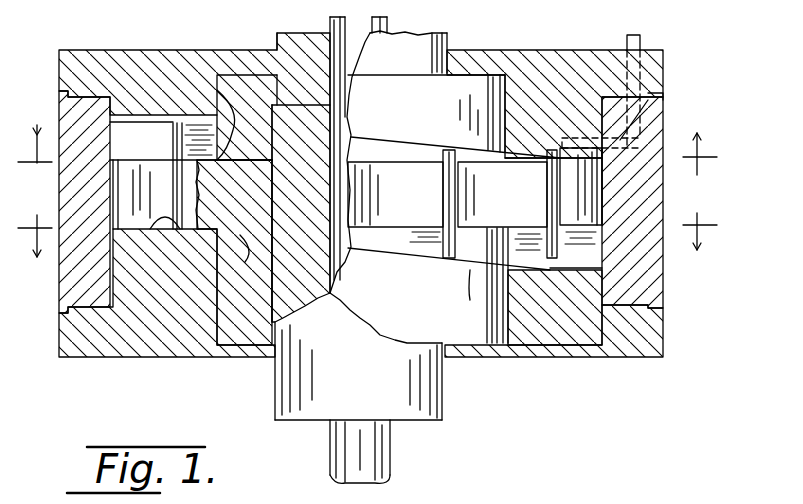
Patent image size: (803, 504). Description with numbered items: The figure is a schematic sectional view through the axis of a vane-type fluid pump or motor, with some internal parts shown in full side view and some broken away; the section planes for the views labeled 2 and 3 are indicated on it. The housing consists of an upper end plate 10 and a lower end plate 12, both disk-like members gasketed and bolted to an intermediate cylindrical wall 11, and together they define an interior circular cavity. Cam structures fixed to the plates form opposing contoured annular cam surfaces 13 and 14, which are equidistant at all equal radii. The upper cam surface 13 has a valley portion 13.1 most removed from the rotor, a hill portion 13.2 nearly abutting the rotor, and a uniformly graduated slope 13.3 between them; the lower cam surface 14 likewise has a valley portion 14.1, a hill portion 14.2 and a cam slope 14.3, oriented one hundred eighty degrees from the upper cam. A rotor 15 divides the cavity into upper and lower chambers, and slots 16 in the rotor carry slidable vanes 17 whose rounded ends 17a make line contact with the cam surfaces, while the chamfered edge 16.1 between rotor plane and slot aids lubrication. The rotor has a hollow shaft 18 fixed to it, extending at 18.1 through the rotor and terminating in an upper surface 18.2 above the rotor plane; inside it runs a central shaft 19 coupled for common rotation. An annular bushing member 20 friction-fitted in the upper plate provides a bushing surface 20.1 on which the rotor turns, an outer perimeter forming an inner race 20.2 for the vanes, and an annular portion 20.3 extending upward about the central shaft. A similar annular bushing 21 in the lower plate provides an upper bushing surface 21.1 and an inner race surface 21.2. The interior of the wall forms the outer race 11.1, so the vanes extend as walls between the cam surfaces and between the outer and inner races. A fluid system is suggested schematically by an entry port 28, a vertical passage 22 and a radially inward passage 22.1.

The upper end plate member 10 is at (533, 50).
The intermediate cylindrical wall 11 is at (640, 195).
The outer race 11.1 is at (117, 195).
The lower end plate member 12 is at (597, 340).
The cam surface 13 is at (393, 143).
The valley portion 13.1 is at (150, 128).
The hill portion 13.2 is at (590, 162).
The slope 13.3 is at (360, 133).
The cam surface 14 is at (372, 255).
The valley portion 14.1 is at (587, 268).
The hill portion 14.2 is at (170, 229).
The cam slope 14.3 is at (480, 283).
The rotor 15 is at (510, 193).
The slots 16 is at (557, 193).
The edge 16.1 is at (440, 160).
The vanes 17 is at (530, 248).
The ends of the vanes 17a is at (170, 118).
The hollow shaft 18 is at (445, 390).
The hollow shaft extension 18.1 is at (322, 219).
The upper surface 18.2 is at (278, 115).
The central shaft 19 is at (382, 25).
The annular bushing member 20 is at (256, 103).
The bushing surface 20.1 is at (218, 125).
The inner race 20.2 is at (200, 122).
The annular portion 20.3 is at (300, 48).
The annular bushing 21 is at (473, 347).
The upper bushing surface 21.1 is at (233, 267).
The inner race surface 21.2 is at (503, 260).
The vertical passage 22 is at (640, 80).
The radially inward passage 22.1 is at (612, 140).
The entry port 28 is at (638, 36).
The section line 2- 2 is at (367, 150).
The section line 3- 3 is at (367, 235).